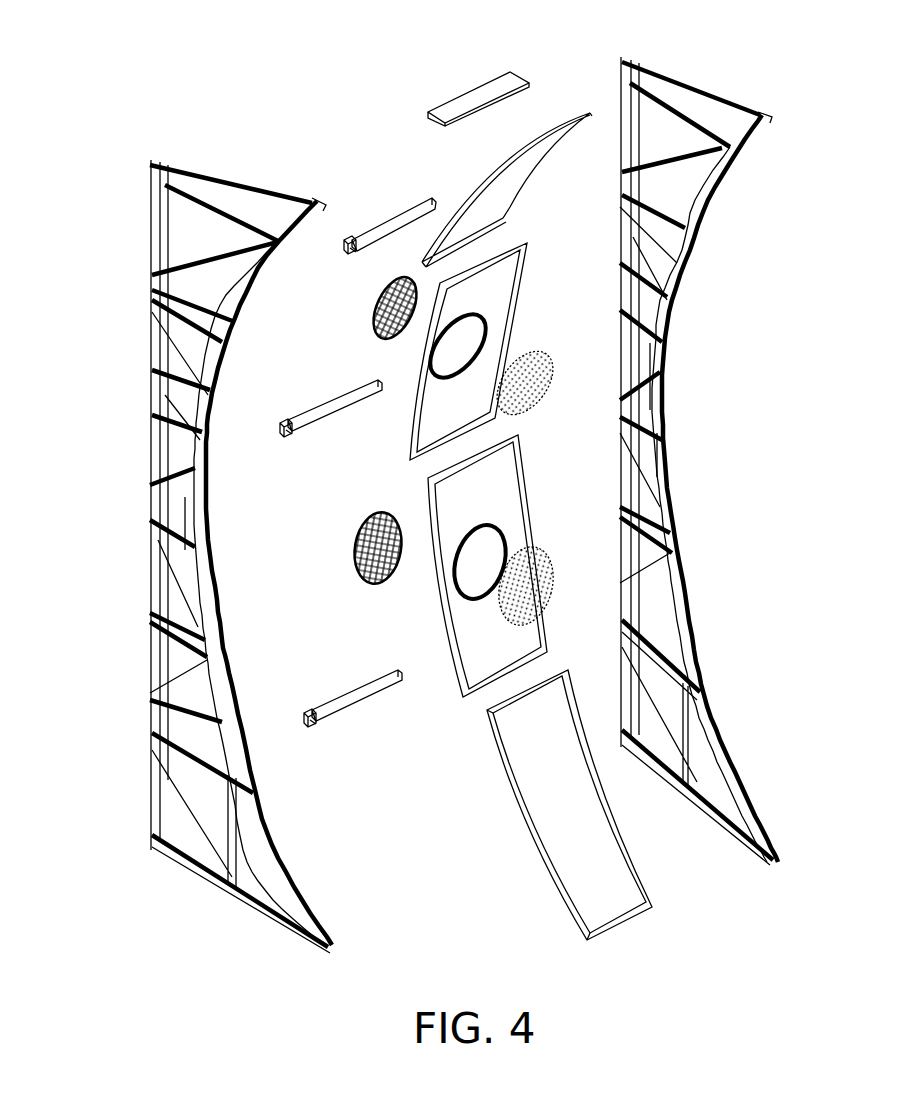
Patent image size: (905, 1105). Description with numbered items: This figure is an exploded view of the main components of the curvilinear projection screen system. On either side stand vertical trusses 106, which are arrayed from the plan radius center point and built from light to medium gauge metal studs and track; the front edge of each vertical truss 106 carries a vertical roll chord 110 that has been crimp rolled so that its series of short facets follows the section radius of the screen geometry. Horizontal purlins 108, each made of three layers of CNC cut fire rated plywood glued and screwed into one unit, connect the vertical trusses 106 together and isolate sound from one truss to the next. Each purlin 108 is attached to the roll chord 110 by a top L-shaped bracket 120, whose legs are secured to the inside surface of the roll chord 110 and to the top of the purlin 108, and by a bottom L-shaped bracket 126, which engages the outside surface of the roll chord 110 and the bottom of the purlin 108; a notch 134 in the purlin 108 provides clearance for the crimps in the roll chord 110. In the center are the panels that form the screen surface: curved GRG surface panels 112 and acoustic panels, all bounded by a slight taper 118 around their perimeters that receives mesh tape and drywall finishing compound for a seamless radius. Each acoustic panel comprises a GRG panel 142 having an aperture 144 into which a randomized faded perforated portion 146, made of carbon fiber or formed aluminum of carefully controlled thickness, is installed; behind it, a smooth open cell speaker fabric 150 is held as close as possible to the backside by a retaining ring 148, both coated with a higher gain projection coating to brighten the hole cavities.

The vertical truss 106 is at (440, 486).
The purlin 108 is at (513, 80).
The vertical roll chord 110 is at (752, 158).
The GRG surface panel 112 is at (507, 213).
The taper 118 is at (458, 195).
The top L-shaped bracket 120 is at (347, 245).
The bottom L-shaped bracket 126 is at (303, 204).
The notch 134 is at (356, 252).
The GRG panel 142 is at (503, 270).
The opening 144 is at (485, 345).
The randomized faded perforated portion 146 is at (538, 395).
The retaining ring 148 is at (361, 428).
The speaker fabric 150 is at (348, 313).